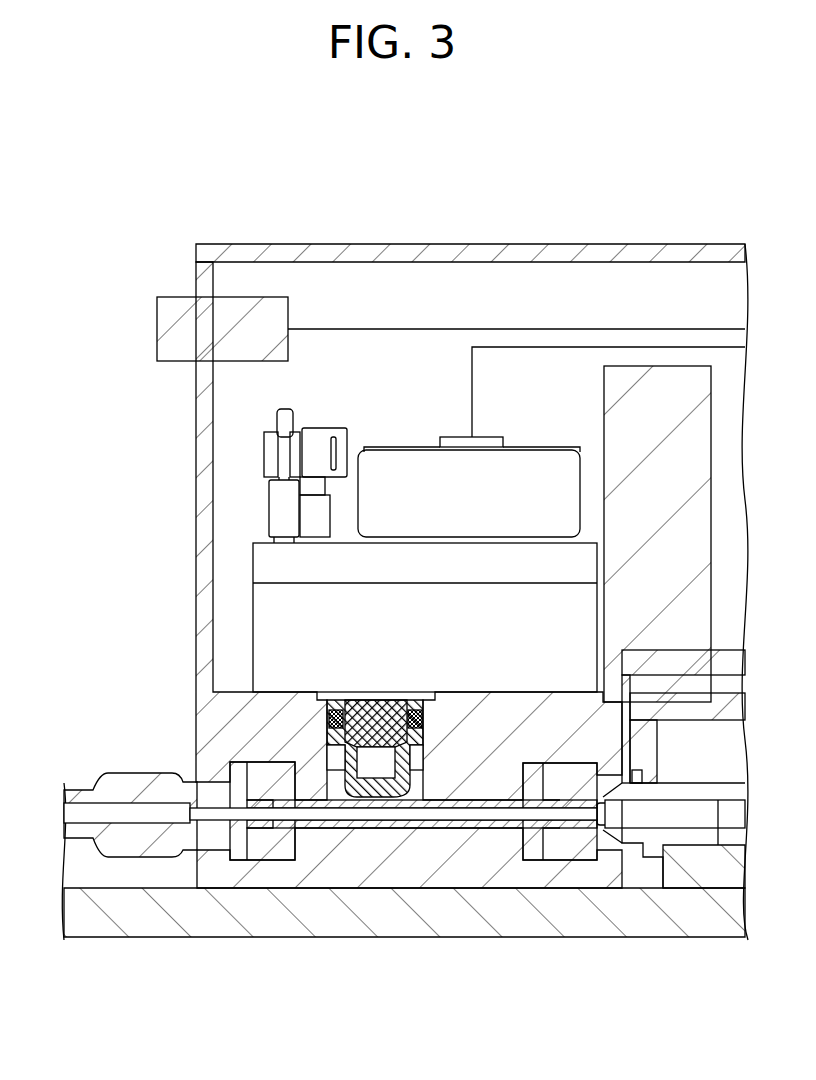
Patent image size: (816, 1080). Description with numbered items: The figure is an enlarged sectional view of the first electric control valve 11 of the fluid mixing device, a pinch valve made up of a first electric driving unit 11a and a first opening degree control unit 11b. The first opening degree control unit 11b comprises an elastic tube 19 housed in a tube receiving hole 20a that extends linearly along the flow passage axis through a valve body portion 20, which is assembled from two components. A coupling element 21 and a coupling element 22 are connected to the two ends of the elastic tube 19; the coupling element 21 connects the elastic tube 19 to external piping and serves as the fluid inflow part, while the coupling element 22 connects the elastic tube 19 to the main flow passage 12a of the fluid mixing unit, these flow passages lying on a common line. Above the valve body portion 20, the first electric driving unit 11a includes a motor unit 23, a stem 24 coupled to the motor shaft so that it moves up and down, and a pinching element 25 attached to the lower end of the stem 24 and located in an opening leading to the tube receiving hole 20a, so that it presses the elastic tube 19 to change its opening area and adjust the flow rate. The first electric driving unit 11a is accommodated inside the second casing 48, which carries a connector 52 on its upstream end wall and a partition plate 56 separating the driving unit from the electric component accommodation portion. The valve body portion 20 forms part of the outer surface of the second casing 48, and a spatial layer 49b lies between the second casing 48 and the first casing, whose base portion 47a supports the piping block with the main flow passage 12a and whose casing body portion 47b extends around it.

The first electric control valve 11 is at (236, 500).
The first electric driving unit 11a is at (270, 605).
The first opening degree control unit 11b is at (385, 800).
The main flow passage 12a is at (728, 817).
The elastic tube 19 is at (490, 830).
The valve body portion 20 is at (205, 733).
The tube receiving hole 20a is at (437, 822).
The coupling element 21 is at (130, 778).
The coupling element 22 is at (604, 848).
The motor unit 23 is at (406, 470).
The stem 24 is at (372, 700).
The pinching element 25 is at (360, 800).
The base portion 47a is at (207, 912).
The casing body portion 47b is at (648, 737).
The second casing 48 is at (543, 250).
The spatial layer 49b is at (628, 727).
The connector 52 is at (157, 325).
The partition plate 56 is at (655, 382).